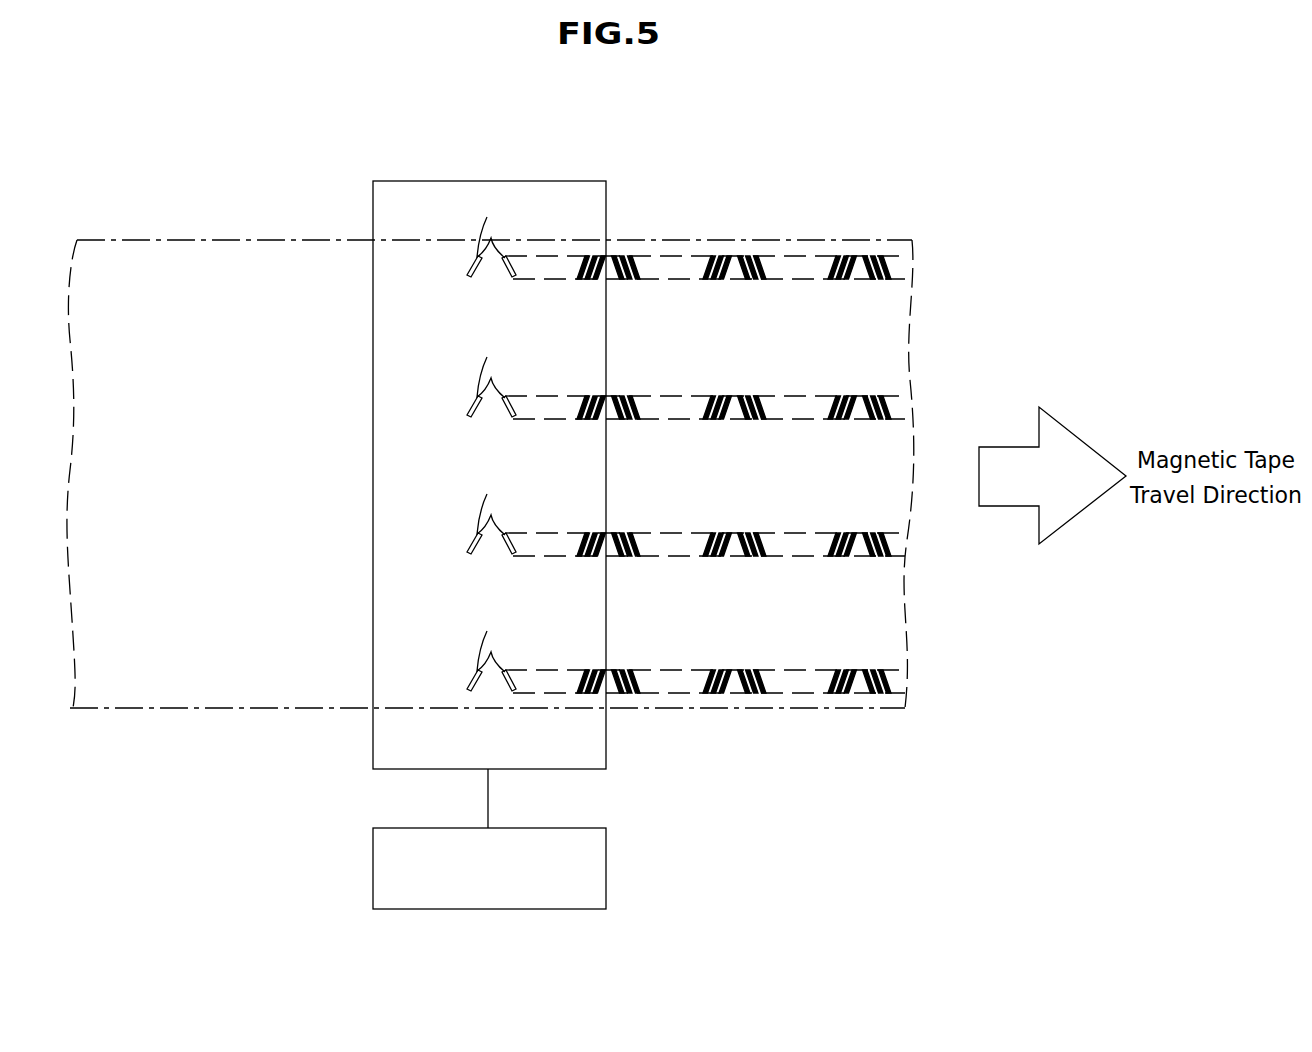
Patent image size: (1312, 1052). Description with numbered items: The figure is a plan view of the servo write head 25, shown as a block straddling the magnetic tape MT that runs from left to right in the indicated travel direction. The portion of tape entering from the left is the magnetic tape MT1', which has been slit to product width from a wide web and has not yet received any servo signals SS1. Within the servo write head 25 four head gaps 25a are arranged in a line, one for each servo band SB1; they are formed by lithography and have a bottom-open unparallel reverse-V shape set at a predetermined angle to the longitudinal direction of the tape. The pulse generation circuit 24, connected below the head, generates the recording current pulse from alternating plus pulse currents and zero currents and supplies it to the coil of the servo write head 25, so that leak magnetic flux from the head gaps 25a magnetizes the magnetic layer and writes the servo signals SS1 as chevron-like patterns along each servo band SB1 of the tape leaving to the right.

The magnetic tape MT is at (850, 240).
The magnetic tape before servo signals are written MT1' is at (157, 417).
The servo signals SS1 is at (803, 469).
The servo band SB1 is at (793, 280).
The servo write head 25 is at (606, 740).
The head gaps 25a is at (491, 439).
The pulse generation circuit 24 is at (606, 838).